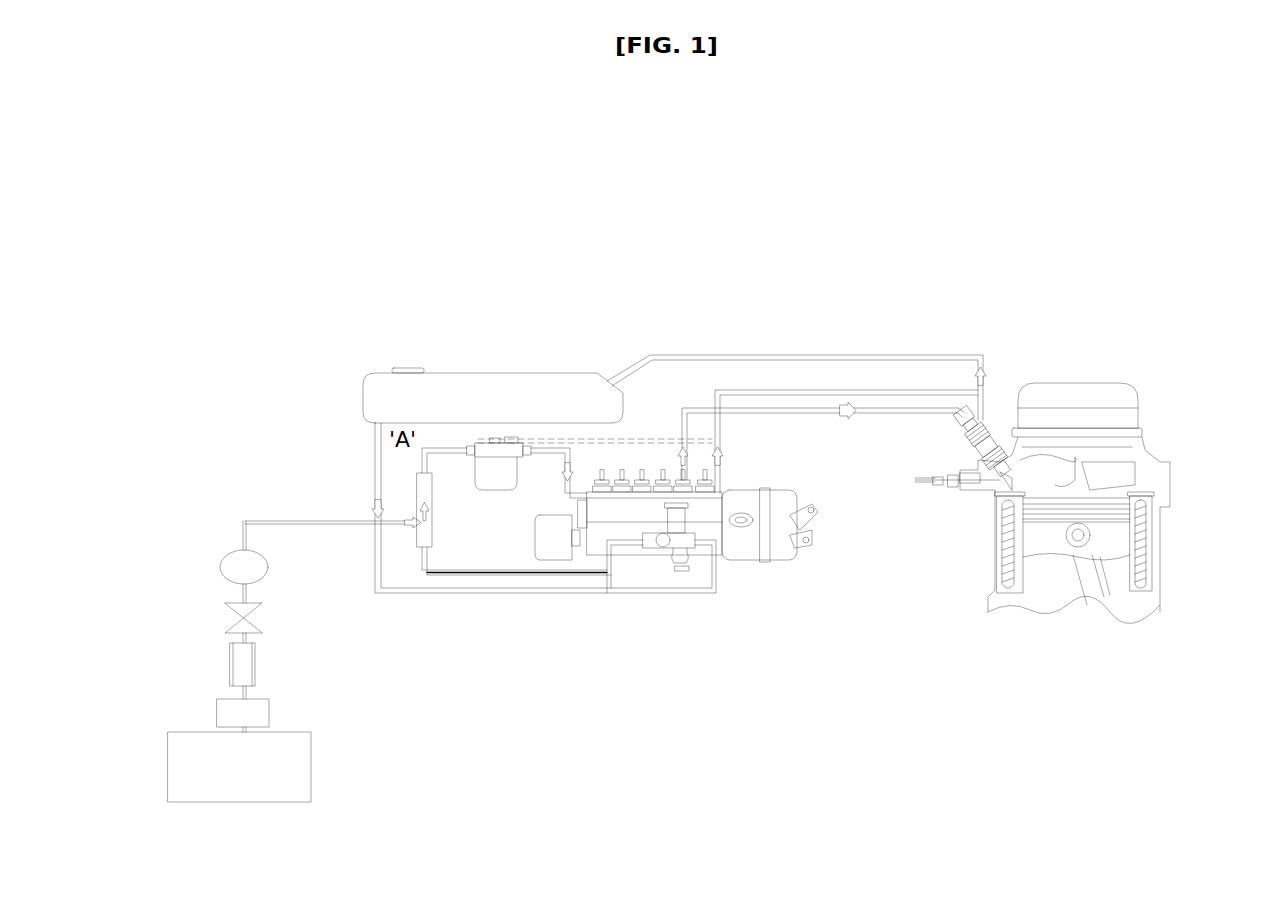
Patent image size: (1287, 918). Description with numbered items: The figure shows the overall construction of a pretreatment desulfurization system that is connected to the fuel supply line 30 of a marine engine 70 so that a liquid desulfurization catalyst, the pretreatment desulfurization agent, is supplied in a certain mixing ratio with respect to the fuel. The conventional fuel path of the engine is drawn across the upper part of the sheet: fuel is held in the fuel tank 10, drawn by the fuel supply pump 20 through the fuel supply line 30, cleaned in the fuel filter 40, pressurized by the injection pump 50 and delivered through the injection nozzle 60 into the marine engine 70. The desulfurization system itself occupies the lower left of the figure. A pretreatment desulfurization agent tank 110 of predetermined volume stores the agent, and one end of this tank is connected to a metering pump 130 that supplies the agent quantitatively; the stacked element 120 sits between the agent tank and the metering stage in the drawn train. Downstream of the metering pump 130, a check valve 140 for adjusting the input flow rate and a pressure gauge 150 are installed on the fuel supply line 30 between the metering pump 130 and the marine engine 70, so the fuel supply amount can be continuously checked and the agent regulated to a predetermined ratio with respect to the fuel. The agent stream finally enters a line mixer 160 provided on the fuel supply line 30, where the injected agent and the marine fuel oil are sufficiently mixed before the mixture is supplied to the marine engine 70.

The fuel tank 10 is at (517, 393).
The fuel supply pump 20 is at (683, 556).
The fuel supply line 30 is at (580, 570).
The fuel filter 40 is at (488, 464).
The injection pump 50 is at (652, 510).
The injection nozzle 60 is at (991, 422).
The marine engine 70 is at (1128, 414).
The pretreatment desulfurization agent tank 110 is at (300, 785).
The additive pump 120 is at (255, 713).
The metering pump 130 is at (258, 665).
The check valve 140 is at (256, 622).
The pressure gauge 150 is at (252, 563).
The line mixer 160 is at (417, 522).